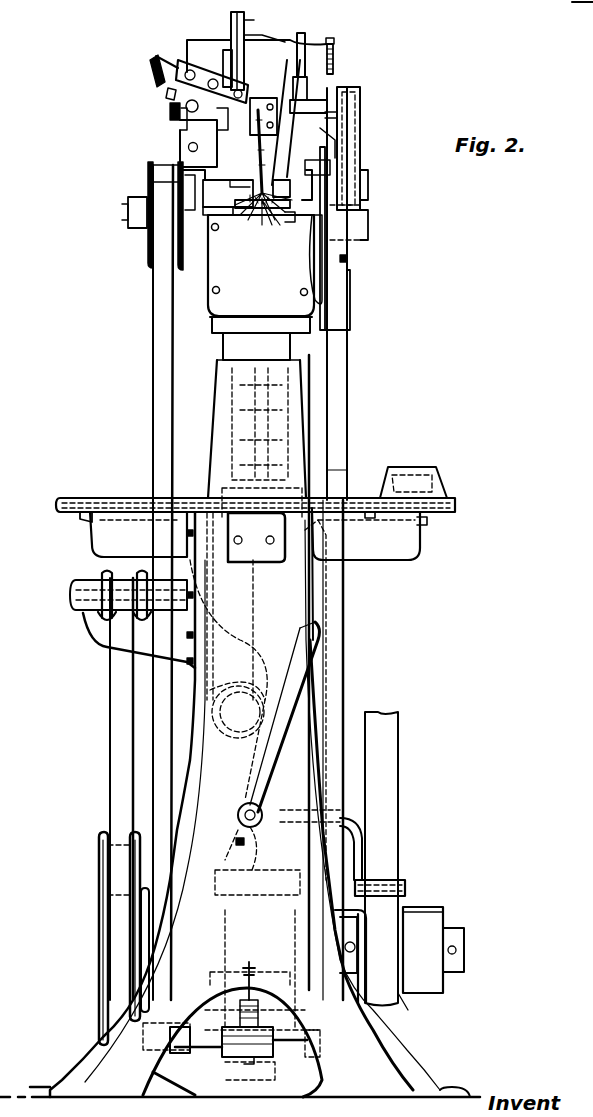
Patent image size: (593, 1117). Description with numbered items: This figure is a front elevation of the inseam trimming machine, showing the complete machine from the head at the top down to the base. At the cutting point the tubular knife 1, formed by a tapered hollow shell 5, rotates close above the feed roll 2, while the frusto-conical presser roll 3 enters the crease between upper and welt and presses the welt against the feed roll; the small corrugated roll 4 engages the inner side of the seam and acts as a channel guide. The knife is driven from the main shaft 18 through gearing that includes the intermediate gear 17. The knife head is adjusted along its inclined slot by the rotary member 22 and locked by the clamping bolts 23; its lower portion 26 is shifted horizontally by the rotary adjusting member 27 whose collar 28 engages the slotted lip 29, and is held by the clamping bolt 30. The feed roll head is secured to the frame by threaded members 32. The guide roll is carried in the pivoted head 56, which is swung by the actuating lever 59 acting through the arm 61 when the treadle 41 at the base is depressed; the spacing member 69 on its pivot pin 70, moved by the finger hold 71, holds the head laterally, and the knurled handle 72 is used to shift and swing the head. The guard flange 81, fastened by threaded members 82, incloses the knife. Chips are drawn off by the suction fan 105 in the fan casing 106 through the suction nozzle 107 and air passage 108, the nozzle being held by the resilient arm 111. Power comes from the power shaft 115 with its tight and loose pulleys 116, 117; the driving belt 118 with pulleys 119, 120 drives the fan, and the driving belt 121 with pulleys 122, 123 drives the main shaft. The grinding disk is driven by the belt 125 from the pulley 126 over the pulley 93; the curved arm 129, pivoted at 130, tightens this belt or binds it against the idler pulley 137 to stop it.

The tubular knife 1 is at (253, 103).
The feed roll 2 is at (287, 195).
The presser roll 3 is at (258, 214).
The corrugated roll 4 is at (280, 224).
The tapered hollow shell 5 is at (232, 200).
The intermediate gear 17 is at (188, 140).
The main shaft 18 is at (126, 216).
The rotary member 22 is at (155, 72).
The clamping bolts 23 is at (170, 74).
The lower portion of head 26 is at (183, 176).
The rotary adjusting member 27 is at (170, 110).
The collar 28 is at (168, 94).
The slotted lip 29 is at (183, 122).
The clamping bolt 30 is at (188, 62).
The threaded members 32 is at (218, 230).
The treadle 41 is at (270, 1050).
The head 56 is at (231, 22).
The actuating lever 59 is at (264, 23).
The arm 61 is at (245, 62).
The spacing member 69 is at (333, 40).
The pivot pin 70 is at (301, 40).
The finger hold 71 is at (284, 76).
The knurled handle 72 is at (335, 58).
The guard flange 81 is at (257, 150).
The threaded members 82 is at (298, 160).
The pulley 93 is at (360, 98).
The suction fan 105 is at (250, 586).
The fan casing 106 is at (325, 591).
The suction nozzle 107 is at (337, 135).
The air passage 108 is at (312, 436).
The resilient arm 111 is at (405, 140).
The power shaft 115 is at (466, 950).
The tight pulley 116 is at (416, 1019).
The loose pulley 117 is at (432, 985).
The driving belt 118 is at (120, 718).
The pulley 119 is at (100, 896).
The pulley 120 is at (103, 580).
The driving belt 121 is at (158, 376).
The pulley 122 is at (140, 973).
The pulley 123 is at (148, 250).
The belt 125 is at (342, 406).
The pulley 126 is at (340, 872).
The curved arm 129 is at (352, 180).
The pivot 130 is at (337, 150).
The idler pulley 137 is at (350, 250).